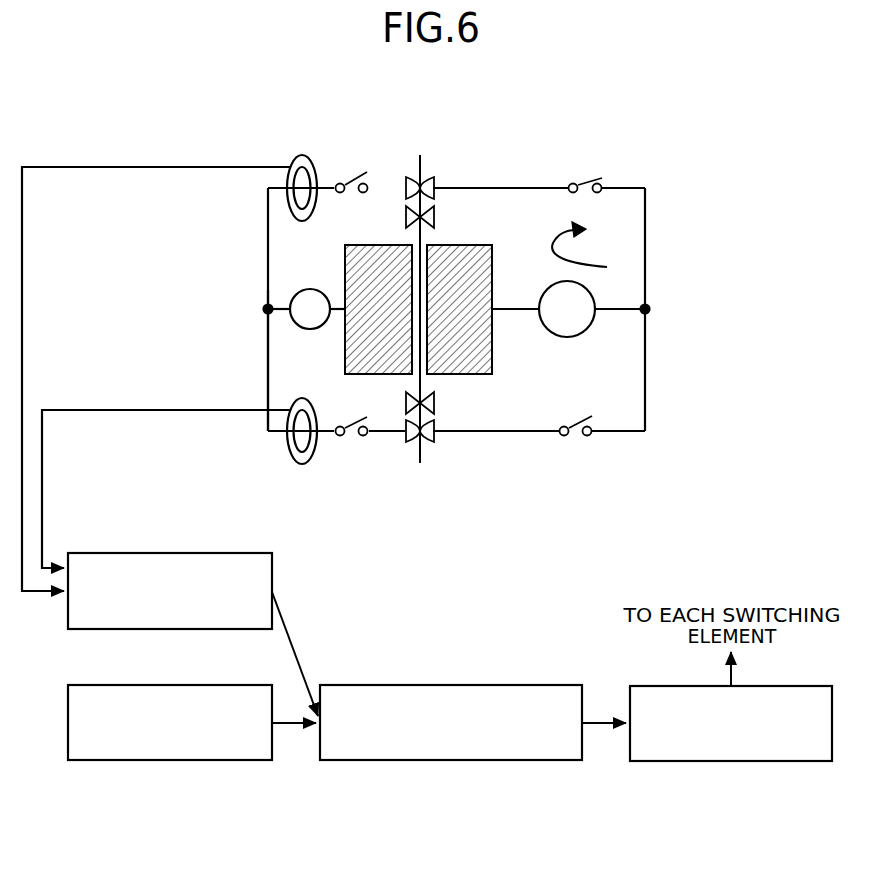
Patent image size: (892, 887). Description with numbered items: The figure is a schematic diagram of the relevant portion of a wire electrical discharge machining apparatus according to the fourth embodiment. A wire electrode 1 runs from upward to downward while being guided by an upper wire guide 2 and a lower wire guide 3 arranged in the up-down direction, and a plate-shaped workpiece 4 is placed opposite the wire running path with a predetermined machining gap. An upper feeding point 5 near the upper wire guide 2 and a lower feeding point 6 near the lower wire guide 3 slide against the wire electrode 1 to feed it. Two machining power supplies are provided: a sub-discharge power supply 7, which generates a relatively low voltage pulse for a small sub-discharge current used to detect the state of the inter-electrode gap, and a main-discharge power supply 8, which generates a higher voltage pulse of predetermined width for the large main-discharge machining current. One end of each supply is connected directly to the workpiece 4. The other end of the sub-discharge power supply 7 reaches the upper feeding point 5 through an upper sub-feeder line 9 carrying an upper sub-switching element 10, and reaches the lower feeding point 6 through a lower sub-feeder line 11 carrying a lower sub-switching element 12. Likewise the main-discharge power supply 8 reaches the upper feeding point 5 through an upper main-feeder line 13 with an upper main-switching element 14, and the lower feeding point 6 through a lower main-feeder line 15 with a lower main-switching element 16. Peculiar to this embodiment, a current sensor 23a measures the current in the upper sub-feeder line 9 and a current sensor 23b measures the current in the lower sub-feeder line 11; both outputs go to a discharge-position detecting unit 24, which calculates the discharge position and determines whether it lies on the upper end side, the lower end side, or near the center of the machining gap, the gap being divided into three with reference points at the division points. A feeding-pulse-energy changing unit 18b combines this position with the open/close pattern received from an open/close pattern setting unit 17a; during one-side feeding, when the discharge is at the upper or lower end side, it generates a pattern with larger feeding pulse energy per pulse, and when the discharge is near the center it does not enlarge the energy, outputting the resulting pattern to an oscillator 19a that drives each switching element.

The wire electrode 1 is at (420, 165).
The upper wire guide 2 is at (437, 217).
The lower wire guide 3 is at (434, 403).
The workpiece 4 is at (492, 360).
The upper feeding point 5 is at (437, 188).
The lower feeding point 6 is at (434, 434).
The sub-discharge power supply 7 is at (311, 330).
The main-discharge power supply 8 is at (568, 338).
The upper sub-feeder line 9 is at (268, 268).
The upper sub-switching element 10 is at (357, 169).
The lower sub-feeder line 11 is at (268, 390).
The lower sub-switching element 12 is at (342, 437).
The upper main-feeder line 13 is at (530, 187).
The upper main-switching element 14 is at (586, 186).
The lower main-feeder line 15 is at (498, 433).
The lower main-switching element 16 is at (564, 437).
The current sensor 23a is at (302, 157).
The current sensor 23b is at (302, 465).
The discharge-position detecting unit 24 is at (245, 630).
The open/close pattern setting unit 17a is at (235, 761).
The feeding-pulse-energy changing unit 18b is at (511, 761).
The oscillator 19a is at (799, 762).